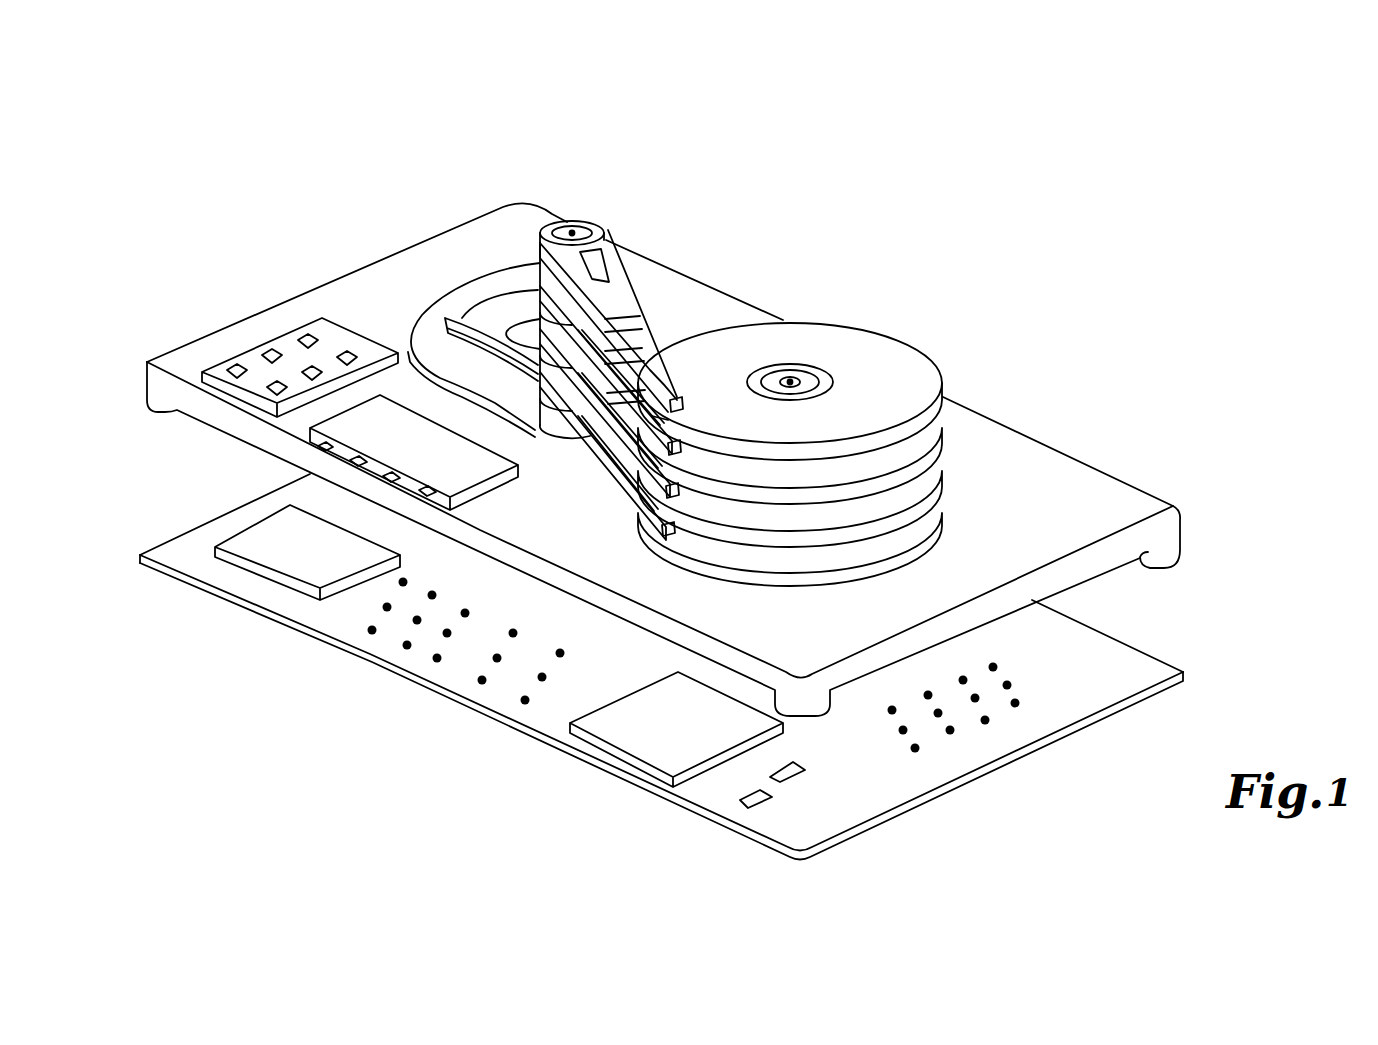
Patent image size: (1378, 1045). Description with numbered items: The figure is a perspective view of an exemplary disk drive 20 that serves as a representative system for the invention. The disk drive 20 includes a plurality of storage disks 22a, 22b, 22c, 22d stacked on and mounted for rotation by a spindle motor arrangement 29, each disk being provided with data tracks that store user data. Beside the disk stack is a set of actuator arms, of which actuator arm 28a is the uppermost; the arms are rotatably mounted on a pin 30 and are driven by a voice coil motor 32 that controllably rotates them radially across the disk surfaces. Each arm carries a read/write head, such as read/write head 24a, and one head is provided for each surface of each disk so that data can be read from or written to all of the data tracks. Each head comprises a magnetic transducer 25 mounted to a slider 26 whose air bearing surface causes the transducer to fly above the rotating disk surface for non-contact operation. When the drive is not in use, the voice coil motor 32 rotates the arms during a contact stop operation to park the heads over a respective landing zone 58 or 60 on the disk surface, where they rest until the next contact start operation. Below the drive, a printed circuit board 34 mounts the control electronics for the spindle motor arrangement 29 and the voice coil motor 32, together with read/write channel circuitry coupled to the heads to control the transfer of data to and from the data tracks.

The disk drive 20 is at (228, 257).
The storage disk 22a is at (839, 391).
The storage disk 22b is at (943, 424).
The storage disk 22c is at (930, 473).
The storage disk 22d is at (925, 518).
The read/write head 24a is at (678, 392).
The magnetic transducer 25 is at (670, 413).
The slider 26 is at (680, 392).
The actuator arm 28a is at (617, 297).
The spindle motor arrangement 29 is at (791, 381).
The pin 30 is at (572, 233).
The voice coil motor 32 is at (470, 302).
The printed circuit board 34 is at (910, 777).
The landing zone 58 is at (833, 393).
The landing zone 60 is at (910, 346).